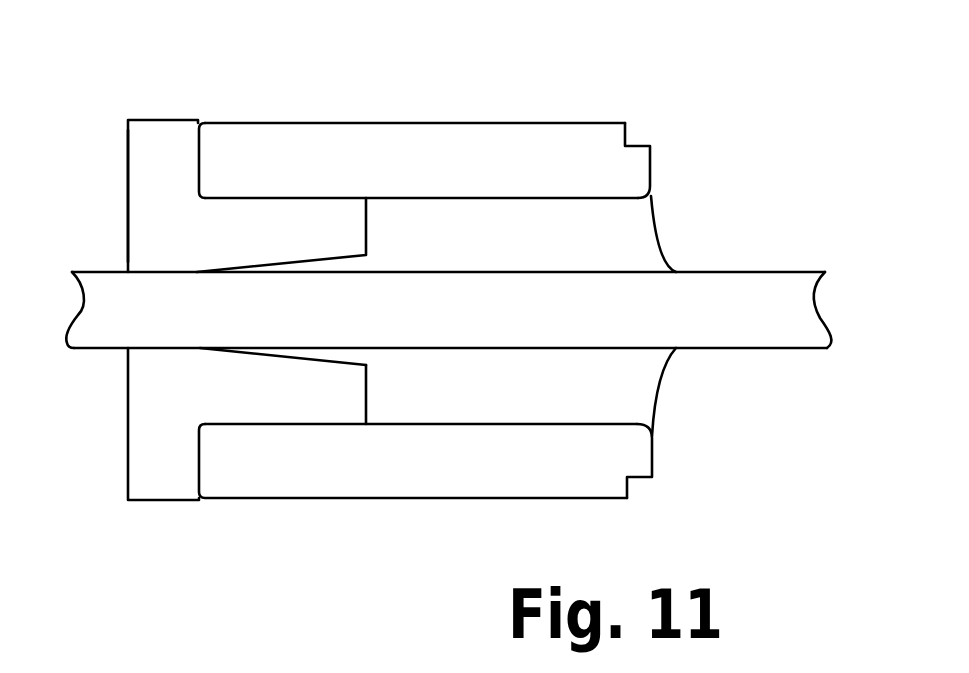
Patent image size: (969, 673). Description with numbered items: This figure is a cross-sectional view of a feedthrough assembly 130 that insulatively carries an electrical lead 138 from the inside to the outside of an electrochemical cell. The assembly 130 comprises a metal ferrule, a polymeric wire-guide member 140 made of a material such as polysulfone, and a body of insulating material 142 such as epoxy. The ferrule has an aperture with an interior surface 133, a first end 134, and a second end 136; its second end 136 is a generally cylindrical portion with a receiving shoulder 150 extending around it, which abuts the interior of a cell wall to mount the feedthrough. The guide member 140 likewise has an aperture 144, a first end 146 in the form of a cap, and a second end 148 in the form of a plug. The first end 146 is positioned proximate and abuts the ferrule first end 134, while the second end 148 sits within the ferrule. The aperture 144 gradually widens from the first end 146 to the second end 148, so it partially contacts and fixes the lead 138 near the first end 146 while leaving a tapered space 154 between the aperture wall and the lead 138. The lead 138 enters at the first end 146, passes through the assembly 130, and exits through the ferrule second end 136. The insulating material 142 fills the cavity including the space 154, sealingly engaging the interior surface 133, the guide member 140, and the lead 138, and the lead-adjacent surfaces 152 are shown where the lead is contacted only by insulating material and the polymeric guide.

The feedthrough assembly 130 is at (408, 80).
The interior surface 133 is at (488, 197).
The first end 134 is at (197, 147).
The second end 136 is at (650, 172).
The electrical lead 138 is at (800, 320).
The polymeric wire-guide member 140 is at (152, 168).
The body of insulating material 142 is at (608, 383).
The aperture 144 is at (233, 348).
The first end 146 is at (127, 257).
The second end 148 is at (366, 395).
The receiving shoulder 150 is at (635, 483).
The sleeve wall 152 is at (260, 238).
The space 154 is at (303, 352).